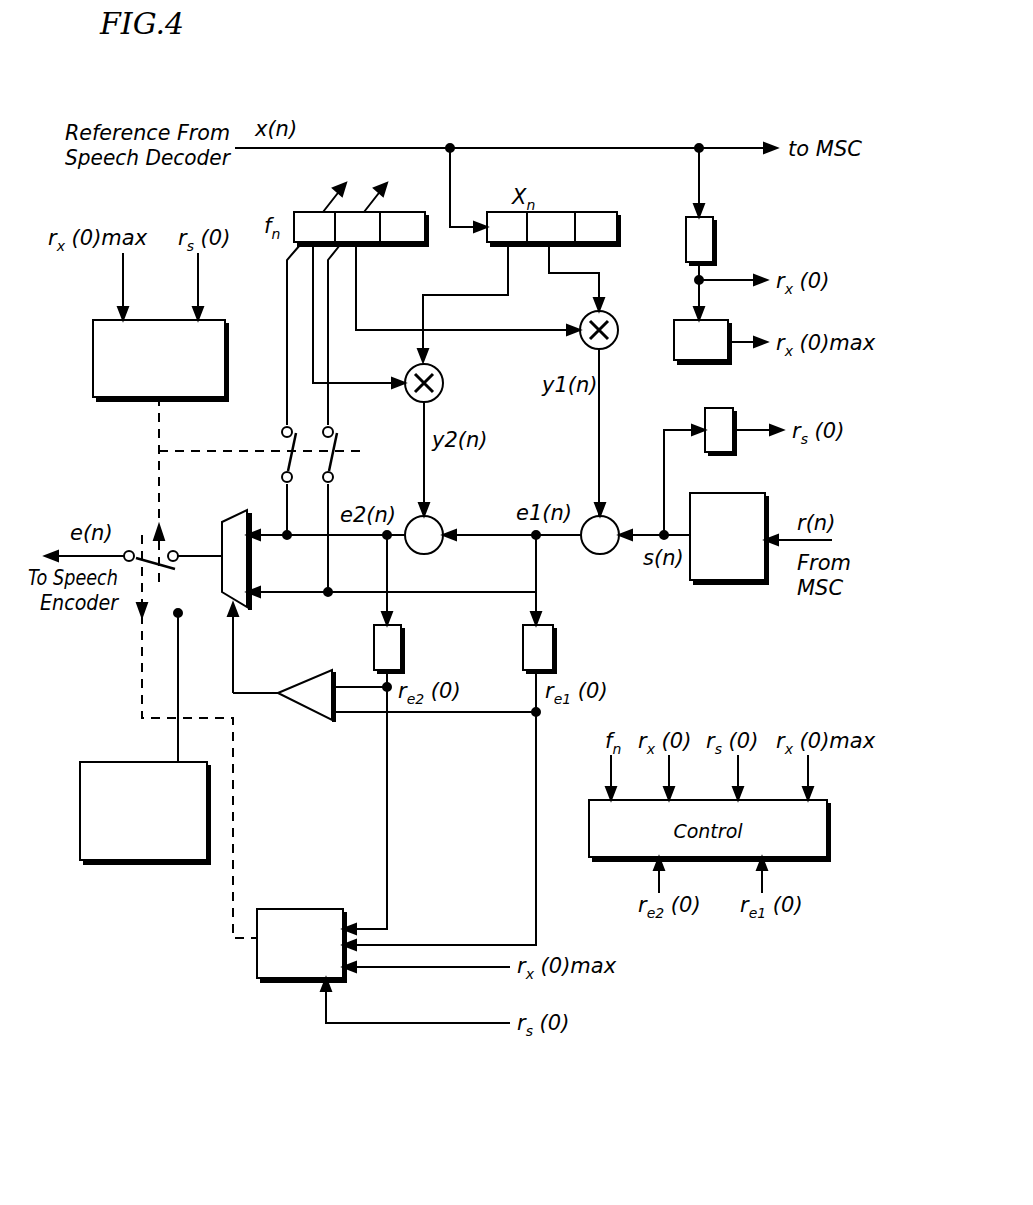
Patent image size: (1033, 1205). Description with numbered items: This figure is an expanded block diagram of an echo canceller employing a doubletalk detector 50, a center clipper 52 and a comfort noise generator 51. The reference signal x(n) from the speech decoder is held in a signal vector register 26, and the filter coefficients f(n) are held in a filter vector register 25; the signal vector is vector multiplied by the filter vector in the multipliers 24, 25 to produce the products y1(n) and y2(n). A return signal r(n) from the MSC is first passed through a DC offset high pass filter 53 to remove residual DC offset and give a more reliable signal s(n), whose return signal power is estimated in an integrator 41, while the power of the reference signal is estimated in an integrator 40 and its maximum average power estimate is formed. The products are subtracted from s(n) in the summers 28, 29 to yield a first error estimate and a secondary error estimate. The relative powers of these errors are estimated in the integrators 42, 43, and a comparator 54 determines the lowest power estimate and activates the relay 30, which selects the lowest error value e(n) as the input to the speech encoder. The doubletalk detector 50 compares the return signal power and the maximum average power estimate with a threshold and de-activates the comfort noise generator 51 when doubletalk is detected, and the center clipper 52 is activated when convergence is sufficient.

The multiplier 24 is at (585, 316).
The multiplier 25 is at (391, 212).
The summer 26 is at (572, 212).
The summer 28 is at (612, 520).
The summer 29 is at (438, 520).
The relay 30 is at (229, 519).
The integrator 40 is at (716, 217).
The integrator 41 is at (736, 408).
The integrator 42 is at (556, 639).
The integrator 43 is at (404, 636).
The doubletalk detector 50 is at (93, 334).
The comfort noise generator 51 is at (140, 761).
The center clipper 52 is at (293, 909).
The DC offset high pass filter 53 is at (767, 496).
The comparator 54 is at (672, 322).